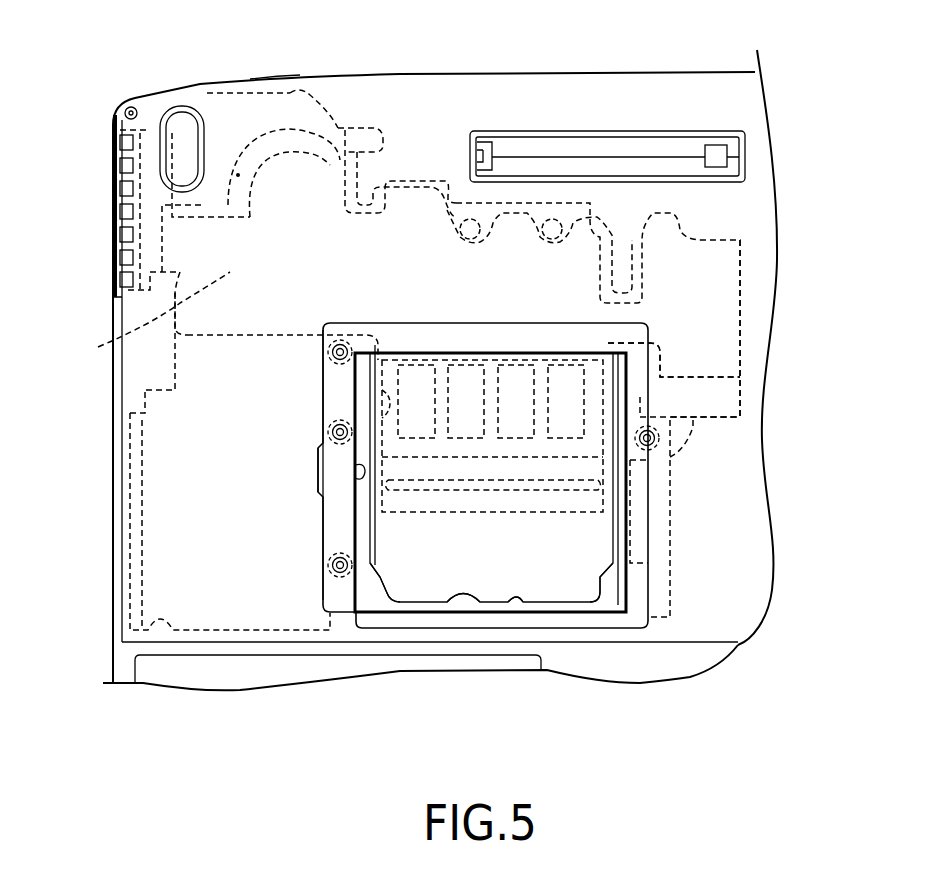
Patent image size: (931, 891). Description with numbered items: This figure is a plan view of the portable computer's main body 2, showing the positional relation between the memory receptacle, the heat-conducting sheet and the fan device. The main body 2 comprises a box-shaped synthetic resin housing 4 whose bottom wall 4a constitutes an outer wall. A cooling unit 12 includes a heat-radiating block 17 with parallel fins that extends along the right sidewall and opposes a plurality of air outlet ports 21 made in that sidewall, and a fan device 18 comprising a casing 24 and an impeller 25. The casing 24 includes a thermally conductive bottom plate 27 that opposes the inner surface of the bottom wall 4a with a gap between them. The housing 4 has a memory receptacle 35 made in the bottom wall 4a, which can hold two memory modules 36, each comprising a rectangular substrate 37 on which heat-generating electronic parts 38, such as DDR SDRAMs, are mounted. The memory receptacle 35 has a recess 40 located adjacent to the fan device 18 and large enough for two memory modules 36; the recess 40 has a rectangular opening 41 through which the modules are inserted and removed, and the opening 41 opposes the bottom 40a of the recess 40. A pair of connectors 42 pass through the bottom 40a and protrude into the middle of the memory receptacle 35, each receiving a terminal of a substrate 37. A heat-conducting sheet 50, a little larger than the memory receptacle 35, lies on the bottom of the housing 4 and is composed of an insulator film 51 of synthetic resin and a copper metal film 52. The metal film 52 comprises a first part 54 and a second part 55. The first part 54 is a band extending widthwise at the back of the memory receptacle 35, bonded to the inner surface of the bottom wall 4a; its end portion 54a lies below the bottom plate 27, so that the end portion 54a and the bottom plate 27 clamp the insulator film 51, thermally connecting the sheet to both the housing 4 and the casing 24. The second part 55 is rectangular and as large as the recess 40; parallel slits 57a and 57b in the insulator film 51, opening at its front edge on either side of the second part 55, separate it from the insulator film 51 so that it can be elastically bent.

The main body 2 is at (106, 402).
The housing 4 is at (608, 80).
The bottom wall 4a is at (765, 196).
The cooling unit 12 is at (274, 70).
The heat-radiating block 17 is at (160, 140).
The fan device 18 is at (397, 156).
The air outlet ports 21 is at (118, 207).
The casing 24 is at (238, 93).
The impeller 25 is at (238, 175).
The bottom plate 27 is at (313, 120).
The memory receptacle 35 is at (366, 605).
The memory modules 36 is at (400, 352).
The substrate 37 is at (383, 415).
The electronic parts 38 is at (510, 363).
The recess 40 is at (358, 477).
The bottom of the recess 40a is at (362, 525).
The opening 41 is at (533, 618).
The connectors 42 is at (485, 500).
The heat-conducting sheet 50 is at (820, 333).
The insulator film 51 is at (730, 397).
The metal film 52 is at (717, 352).
The first part 54 is at (413, 240).
The end portion 54a is at (141, 315).
The second part 55 is at (580, 583).
The slit 57a is at (377, 570).
The slit 57b is at (600, 563).